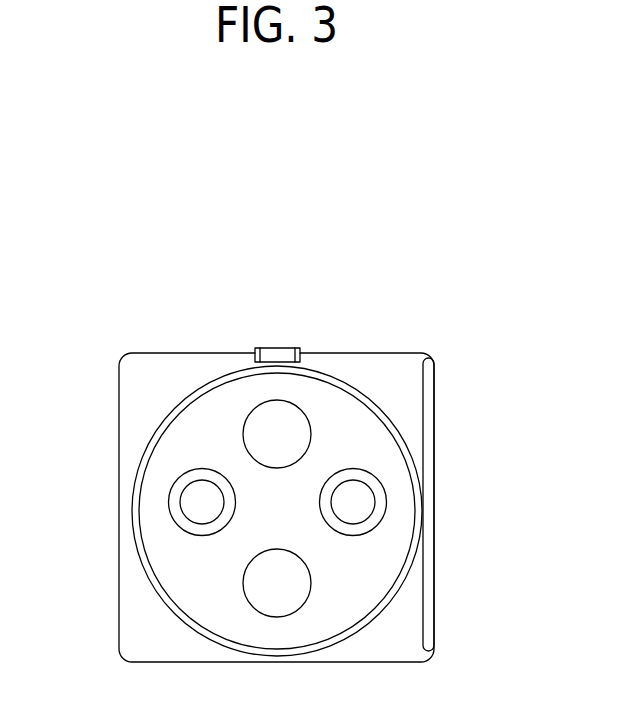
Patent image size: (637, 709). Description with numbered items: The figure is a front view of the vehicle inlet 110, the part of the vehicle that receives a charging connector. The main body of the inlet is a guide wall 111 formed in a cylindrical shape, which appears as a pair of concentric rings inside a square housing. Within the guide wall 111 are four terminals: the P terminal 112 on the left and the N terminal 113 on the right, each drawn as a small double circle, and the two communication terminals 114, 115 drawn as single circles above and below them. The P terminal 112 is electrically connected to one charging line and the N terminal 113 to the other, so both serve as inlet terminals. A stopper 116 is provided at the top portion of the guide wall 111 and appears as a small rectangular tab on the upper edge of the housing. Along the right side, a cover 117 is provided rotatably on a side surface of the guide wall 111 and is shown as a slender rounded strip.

The vehicle inlet 110 is at (433, 145).
The guide wall 111 is at (328, 373).
The P terminal 112 is at (181, 493).
The N terminal 113 is at (353, 480).
The communication terminal 114 is at (262, 400).
The communication terminal 115 is at (268, 550).
The stopper 116 is at (288, 358).
The cover 117 is at (427, 437).